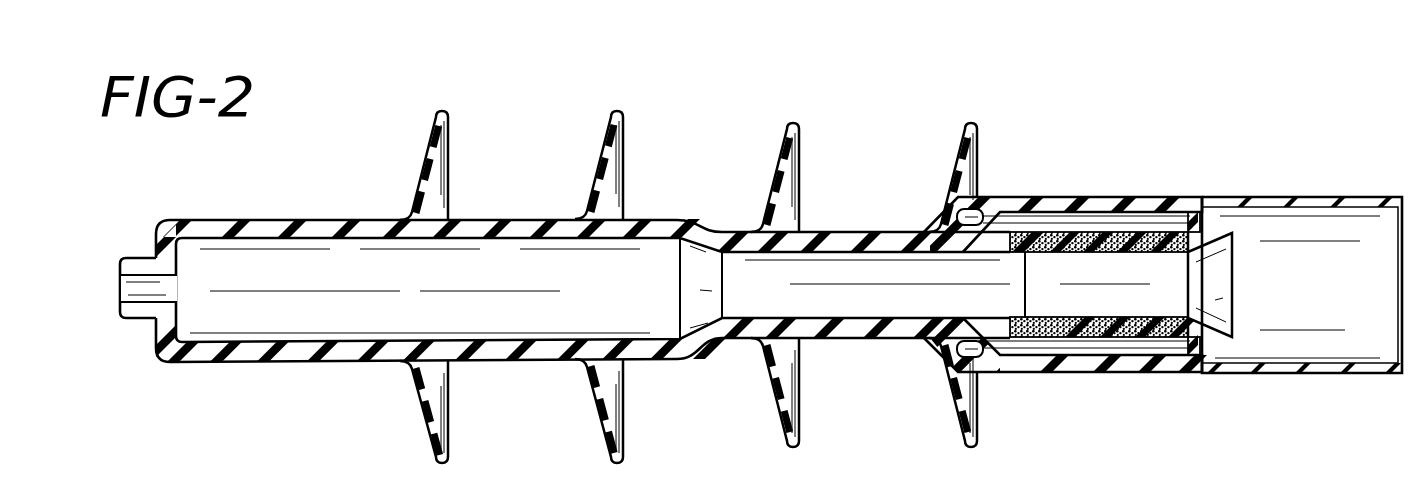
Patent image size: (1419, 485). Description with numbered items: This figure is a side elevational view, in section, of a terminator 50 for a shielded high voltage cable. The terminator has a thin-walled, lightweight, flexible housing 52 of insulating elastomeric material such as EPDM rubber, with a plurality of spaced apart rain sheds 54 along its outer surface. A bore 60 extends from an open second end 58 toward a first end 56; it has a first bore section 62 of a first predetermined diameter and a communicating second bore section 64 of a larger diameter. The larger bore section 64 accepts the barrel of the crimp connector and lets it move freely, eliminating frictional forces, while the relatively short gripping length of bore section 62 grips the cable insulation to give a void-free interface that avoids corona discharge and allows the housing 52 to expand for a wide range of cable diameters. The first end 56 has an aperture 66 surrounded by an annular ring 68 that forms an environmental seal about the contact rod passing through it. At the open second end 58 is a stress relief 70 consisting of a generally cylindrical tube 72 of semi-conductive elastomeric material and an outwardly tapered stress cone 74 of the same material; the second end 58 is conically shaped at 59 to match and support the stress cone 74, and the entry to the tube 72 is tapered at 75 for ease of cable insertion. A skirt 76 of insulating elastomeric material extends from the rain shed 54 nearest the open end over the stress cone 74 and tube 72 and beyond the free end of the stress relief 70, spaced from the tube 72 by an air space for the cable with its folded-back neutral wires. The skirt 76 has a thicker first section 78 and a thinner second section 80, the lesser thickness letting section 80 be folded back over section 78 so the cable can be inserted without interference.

The terminator 50 is at (921, 101).
The housing 52 is at (331, 219).
The rain sheds 54 is at (600, 153).
The first end 56 is at (124, 258).
The open second end 58 is at (1026, 282).
The conically shaped portion of second end 59 is at (1013, 323).
The bore 60 is at (320, 312).
The first bore section 62 is at (762, 258).
The second bore section 64 is at (268, 237).
The aperture 66 is at (124, 289).
The annular ring 68 is at (128, 320).
The stress relief 70 is at (1160, 339).
The tube 72 is at (1115, 340).
The stress cone 74 is at (936, 222).
The tapered entry 75 is at (1207, 323).
The skirt 76 is at (1188, 195).
The first section of skirt 78 is at (1122, 197).
The second section of skirt 80 is at (1297, 197).